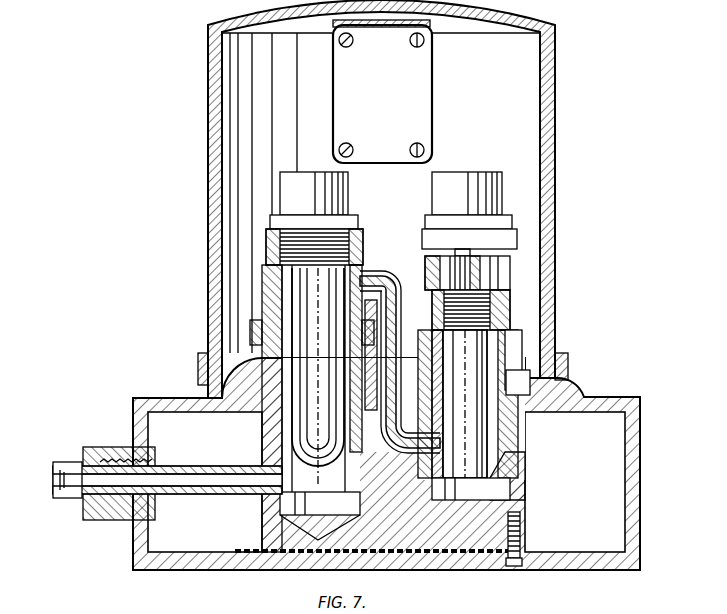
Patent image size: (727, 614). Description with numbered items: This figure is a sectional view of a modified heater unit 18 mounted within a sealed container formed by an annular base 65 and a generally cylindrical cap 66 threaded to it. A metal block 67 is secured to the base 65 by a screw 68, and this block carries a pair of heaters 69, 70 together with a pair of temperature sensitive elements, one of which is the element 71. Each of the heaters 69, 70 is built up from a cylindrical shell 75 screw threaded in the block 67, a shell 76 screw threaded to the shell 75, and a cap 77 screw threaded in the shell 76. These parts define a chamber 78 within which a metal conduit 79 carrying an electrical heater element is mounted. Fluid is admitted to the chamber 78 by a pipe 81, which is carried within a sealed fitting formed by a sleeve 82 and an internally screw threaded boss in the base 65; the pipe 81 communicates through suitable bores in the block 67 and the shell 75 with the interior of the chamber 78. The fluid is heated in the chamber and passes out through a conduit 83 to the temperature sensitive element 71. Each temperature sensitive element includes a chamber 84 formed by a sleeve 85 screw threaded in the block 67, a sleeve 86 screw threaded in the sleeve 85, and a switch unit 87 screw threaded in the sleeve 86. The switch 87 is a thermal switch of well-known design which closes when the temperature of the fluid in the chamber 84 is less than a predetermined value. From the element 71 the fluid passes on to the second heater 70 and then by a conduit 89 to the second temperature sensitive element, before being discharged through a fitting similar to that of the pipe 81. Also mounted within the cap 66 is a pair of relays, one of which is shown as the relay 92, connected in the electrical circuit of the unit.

The heater unit 18 is at (560, 258).
The annular base 65 is at (590, 398).
The cylindrical cap 66 is at (556, 314).
The metal block 67 is at (521, 495).
The screw 68 is at (512, 566).
The heater 69 is at (352, 187).
The heater 70 is at (480, 168).
The temperature sensitive element 71 is at (503, 268).
The cylindrical shell 75 is at (268, 433).
The shell 76 is at (268, 282).
The cap 77 is at (346, 214).
The chamber 78 is at (326, 533).
The metal conduit 79 is at (316, 482).
The pipe 81 is at (195, 500).
The sleeve 82 is at (155, 464).
The conduit 83 is at (371, 274).
The chamber 84 is at (478, 518).
The sleeve 85 is at (503, 428).
The sleeve 86 is at (430, 355).
The switch unit 87 is at (468, 443).
The conduit 89 is at (403, 350).
The relay 92 is at (418, 78).